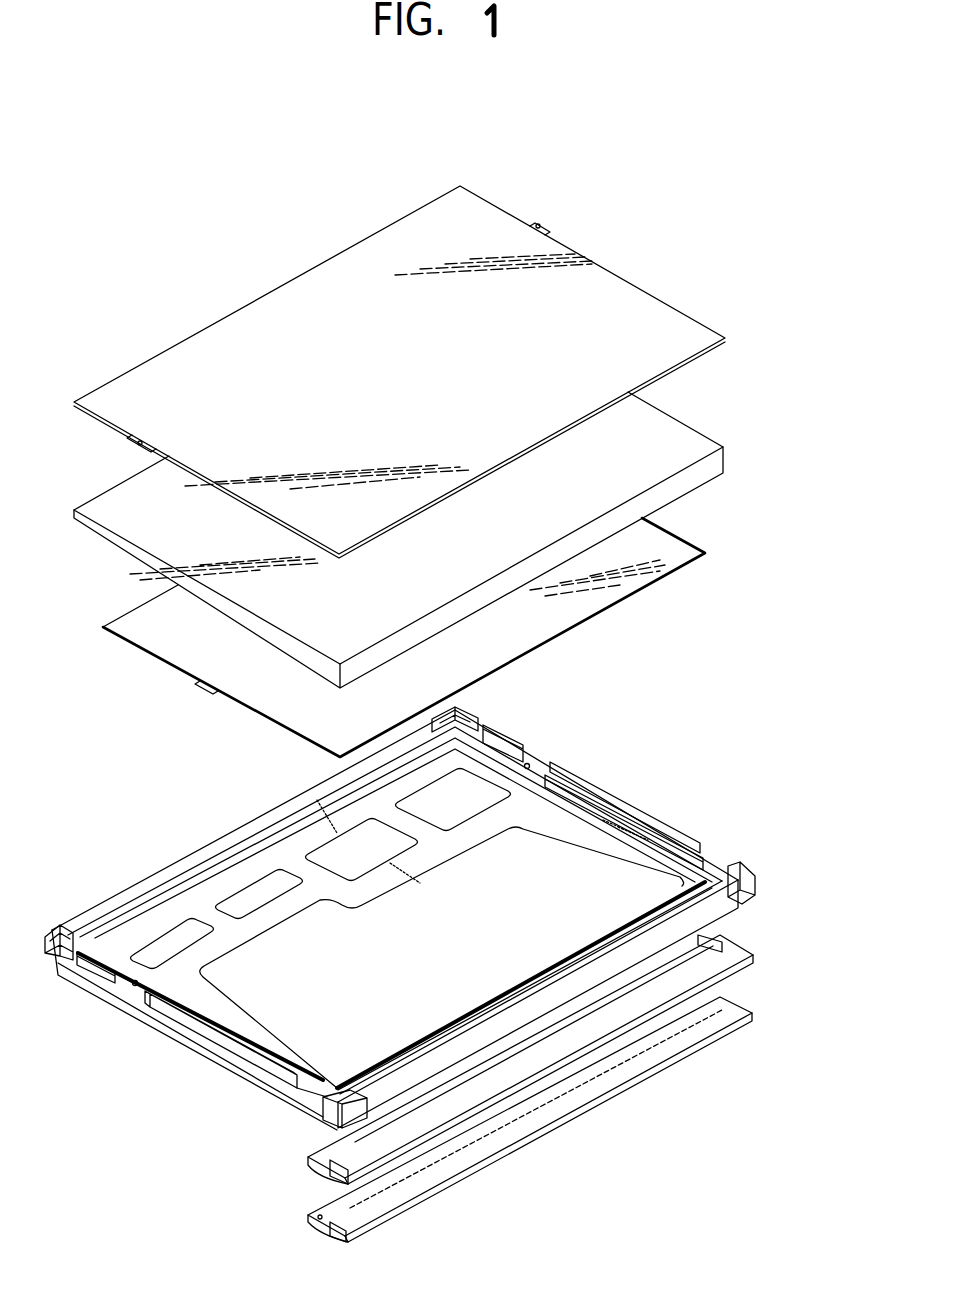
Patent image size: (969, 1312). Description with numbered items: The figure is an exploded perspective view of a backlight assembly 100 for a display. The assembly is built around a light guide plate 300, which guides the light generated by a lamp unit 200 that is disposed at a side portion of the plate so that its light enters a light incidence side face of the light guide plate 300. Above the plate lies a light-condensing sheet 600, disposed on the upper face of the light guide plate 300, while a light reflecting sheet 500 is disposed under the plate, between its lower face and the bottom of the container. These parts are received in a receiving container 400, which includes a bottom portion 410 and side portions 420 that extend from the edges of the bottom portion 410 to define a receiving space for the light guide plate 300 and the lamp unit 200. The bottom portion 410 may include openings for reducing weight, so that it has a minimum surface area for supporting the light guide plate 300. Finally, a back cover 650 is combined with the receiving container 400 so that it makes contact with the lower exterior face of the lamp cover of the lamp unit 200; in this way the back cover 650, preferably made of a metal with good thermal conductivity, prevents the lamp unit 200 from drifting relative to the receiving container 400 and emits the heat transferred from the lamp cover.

The backlight assembly 100 is at (353, 176).
The light-condensing sheet 600 is at (712, 319).
The light guide plate 300 is at (710, 427).
The light reflecting sheet 500 is at (689, 535).
The receiving container 400 is at (699, 832).
The bottom portion 410 is at (203, 996).
The side portions 420 is at (303, 1097).
The lamp unit 200 is at (747, 935).
The back cover 650 is at (313, 1233).